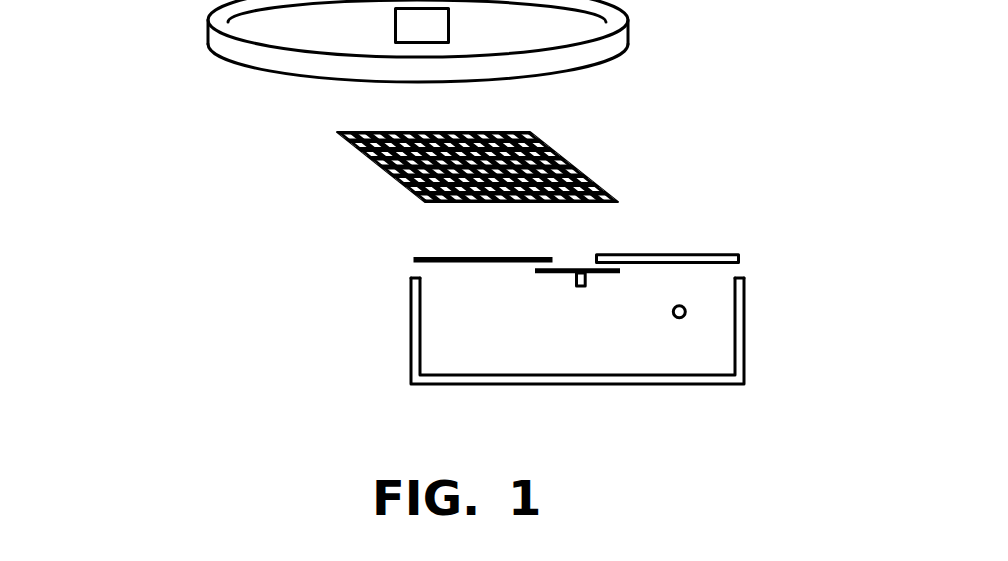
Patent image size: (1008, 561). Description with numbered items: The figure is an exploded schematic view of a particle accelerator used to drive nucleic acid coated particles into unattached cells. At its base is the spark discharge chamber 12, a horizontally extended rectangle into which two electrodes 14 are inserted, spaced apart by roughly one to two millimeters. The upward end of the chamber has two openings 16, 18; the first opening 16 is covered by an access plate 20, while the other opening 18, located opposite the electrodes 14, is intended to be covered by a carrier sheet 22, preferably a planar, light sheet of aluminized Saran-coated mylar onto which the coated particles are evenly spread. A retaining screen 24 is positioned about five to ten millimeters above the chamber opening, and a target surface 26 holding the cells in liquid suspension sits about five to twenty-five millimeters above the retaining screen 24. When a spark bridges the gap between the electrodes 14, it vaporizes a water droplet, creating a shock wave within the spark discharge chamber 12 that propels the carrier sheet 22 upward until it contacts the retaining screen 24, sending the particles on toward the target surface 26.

The spark discharge chamber 12 is at (410, 345).
The electrodes 14 is at (690, 318).
The opening 16 is at (710, 298).
The opening 18 is at (448, 297).
The access plate 20 is at (690, 252).
The carrier sheet 22 is at (437, 253).
The retaining screen 24 is at (356, 160).
The target surface 26 is at (253, 42).